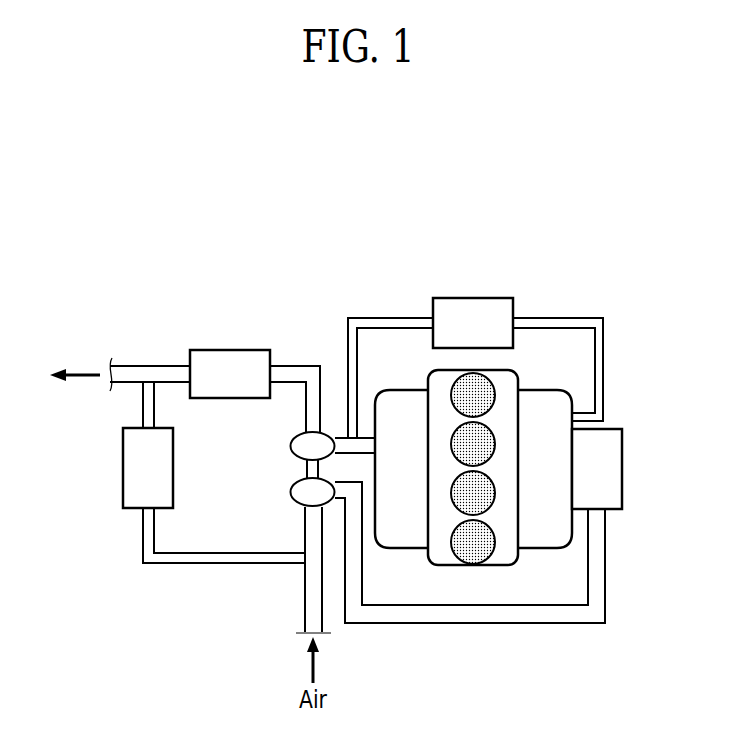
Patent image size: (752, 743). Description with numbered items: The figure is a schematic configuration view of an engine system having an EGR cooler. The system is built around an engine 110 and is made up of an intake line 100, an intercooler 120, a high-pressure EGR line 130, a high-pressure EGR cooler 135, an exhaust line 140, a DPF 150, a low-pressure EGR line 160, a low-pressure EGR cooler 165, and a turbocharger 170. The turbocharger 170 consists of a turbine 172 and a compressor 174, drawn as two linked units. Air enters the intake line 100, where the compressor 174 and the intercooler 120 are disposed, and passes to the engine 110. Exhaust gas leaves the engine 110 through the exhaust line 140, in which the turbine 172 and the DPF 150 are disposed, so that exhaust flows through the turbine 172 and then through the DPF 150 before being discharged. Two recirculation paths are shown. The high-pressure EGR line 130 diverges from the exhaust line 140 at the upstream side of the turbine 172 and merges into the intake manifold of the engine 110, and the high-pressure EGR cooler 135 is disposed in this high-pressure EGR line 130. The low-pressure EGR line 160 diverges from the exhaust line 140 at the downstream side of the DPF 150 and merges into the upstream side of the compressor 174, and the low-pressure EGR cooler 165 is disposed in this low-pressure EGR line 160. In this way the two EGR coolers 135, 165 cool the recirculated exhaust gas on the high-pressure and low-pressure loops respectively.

The intake line 100 is at (417, 613).
The engine 110 is at (526, 571).
The intercooler 120 is at (622, 467).
The high-pressure EGR line 130 is at (555, 326).
The high-pressure EGR cooler 135 is at (473, 298).
The exhaust line 140 is at (296, 368).
The DPF 150 is at (232, 350).
The low-pressure EGR line 160 is at (173, 560).
The low-pressure EGR cooler 165 is at (123, 468).
The turbocharger 170 is at (295, 547).
The turbine 172 is at (292, 450).
The compressor 174 is at (302, 492).